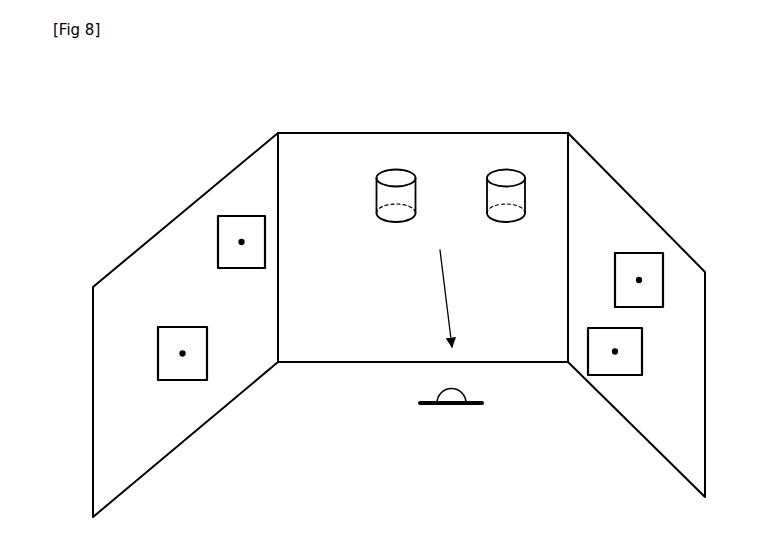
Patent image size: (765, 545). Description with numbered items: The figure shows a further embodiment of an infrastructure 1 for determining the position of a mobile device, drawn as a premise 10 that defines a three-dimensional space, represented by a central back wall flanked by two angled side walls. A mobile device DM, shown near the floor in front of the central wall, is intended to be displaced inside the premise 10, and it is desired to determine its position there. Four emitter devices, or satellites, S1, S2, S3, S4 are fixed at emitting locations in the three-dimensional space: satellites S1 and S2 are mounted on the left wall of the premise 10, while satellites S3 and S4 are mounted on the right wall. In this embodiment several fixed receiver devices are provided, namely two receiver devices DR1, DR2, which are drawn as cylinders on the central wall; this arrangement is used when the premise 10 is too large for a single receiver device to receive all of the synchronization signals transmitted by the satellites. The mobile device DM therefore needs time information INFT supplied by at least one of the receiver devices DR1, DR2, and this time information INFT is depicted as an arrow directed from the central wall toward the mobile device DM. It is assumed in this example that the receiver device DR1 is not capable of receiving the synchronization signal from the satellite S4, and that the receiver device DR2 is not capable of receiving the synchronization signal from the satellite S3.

The infrastructure 1 is at (632, 97).
The premise 10 is at (638, 203).
The emitter device S1 is at (158, 352).
The emitter device S2 is at (243, 268).
The emitter device S3 is at (642, 351).
The emitter device S4 is at (628, 253).
The receiver device DR1 is at (400, 170).
The receiver device DR2 is at (511, 170).
The time information INFT is at (447, 300).
The mobile device DM is at (462, 393).